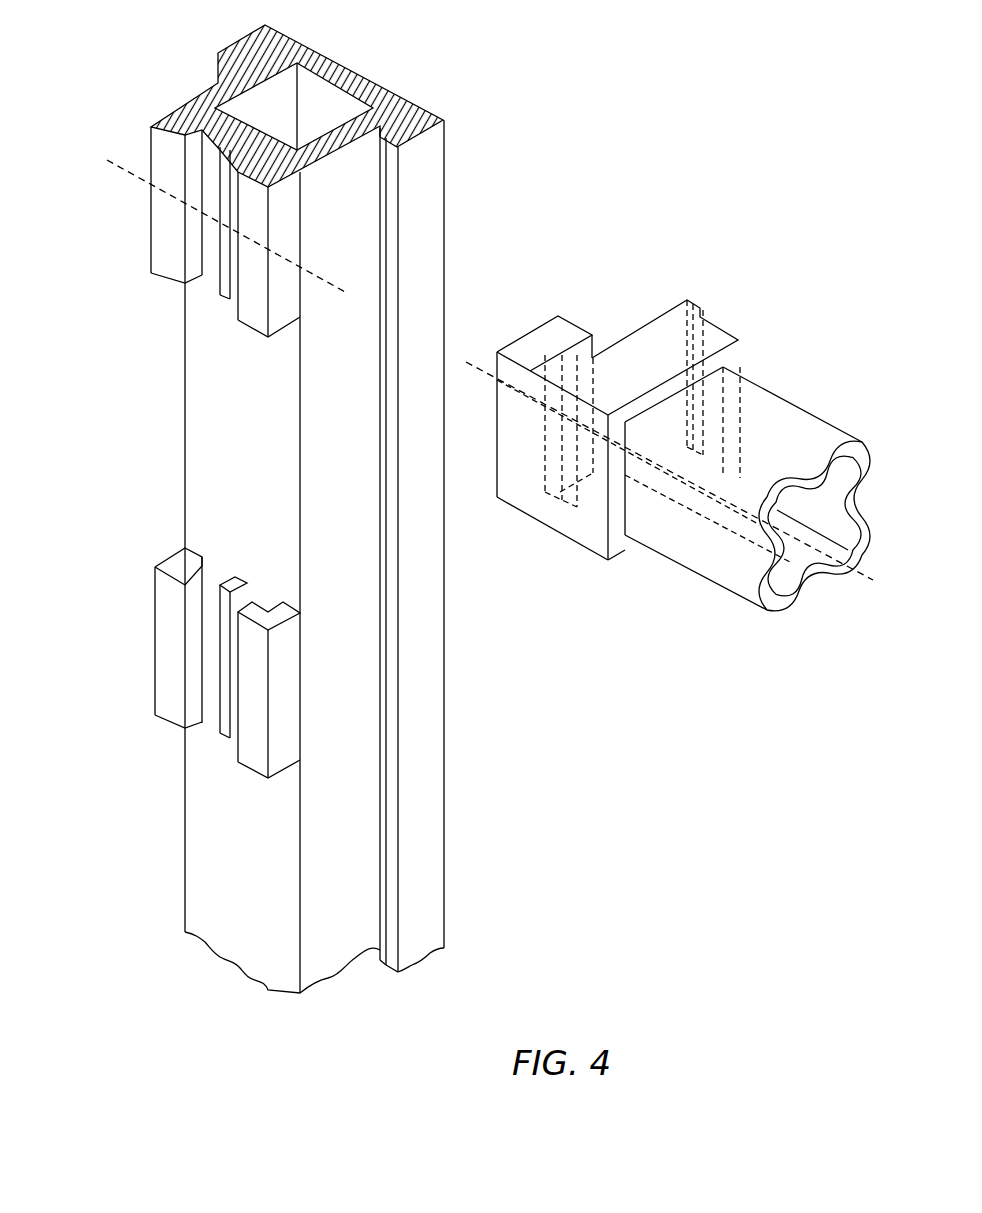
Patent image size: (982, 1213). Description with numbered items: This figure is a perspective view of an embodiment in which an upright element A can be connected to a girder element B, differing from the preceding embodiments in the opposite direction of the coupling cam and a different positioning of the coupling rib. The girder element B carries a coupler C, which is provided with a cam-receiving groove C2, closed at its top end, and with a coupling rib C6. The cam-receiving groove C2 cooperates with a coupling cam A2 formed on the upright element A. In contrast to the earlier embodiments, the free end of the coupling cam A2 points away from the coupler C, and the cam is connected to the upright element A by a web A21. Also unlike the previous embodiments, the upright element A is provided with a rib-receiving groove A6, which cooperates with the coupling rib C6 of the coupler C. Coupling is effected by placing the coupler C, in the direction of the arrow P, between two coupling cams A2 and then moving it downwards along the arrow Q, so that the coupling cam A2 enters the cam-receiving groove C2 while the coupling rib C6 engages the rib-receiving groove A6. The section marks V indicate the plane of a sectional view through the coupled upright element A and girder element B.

The upright element A is at (294, 509).
The coupling cam A2 is at (280, 208).
The web A21 is at (380, 207).
The rib-receiving groove A6 is at (390, 165).
The coupler C is at (657, 400).
The cam-receiving groove C2 is at (557, 493).
The coupling rib C6 is at (688, 297).
The girder element B is at (692, 587).
The arrow P is at (597, 648).
The arrow Q is at (602, 772).
The section line V- V is at (102, 157).